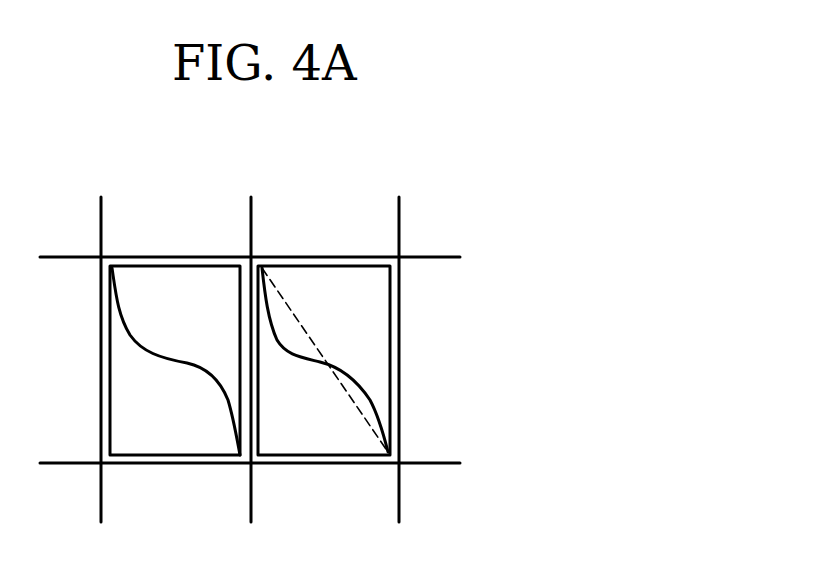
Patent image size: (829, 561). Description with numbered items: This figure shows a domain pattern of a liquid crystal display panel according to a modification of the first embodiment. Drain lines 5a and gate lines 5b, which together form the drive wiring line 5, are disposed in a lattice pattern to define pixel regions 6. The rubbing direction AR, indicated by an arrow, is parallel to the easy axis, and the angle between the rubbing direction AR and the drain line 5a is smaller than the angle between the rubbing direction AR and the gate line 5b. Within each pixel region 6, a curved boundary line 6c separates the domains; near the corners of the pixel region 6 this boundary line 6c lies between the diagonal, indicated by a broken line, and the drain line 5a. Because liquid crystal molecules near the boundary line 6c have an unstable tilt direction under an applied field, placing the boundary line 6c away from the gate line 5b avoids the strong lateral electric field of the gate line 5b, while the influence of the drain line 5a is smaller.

The rubbing direction AR is at (186, 221).
The drive wiring line 5 is at (250, 314).
The drain line 5a is at (251, 222).
The gate line 5b is at (275, 162).
The pixel region 6 is at (392, 327).
The boundary line 6c is at (377, 407).